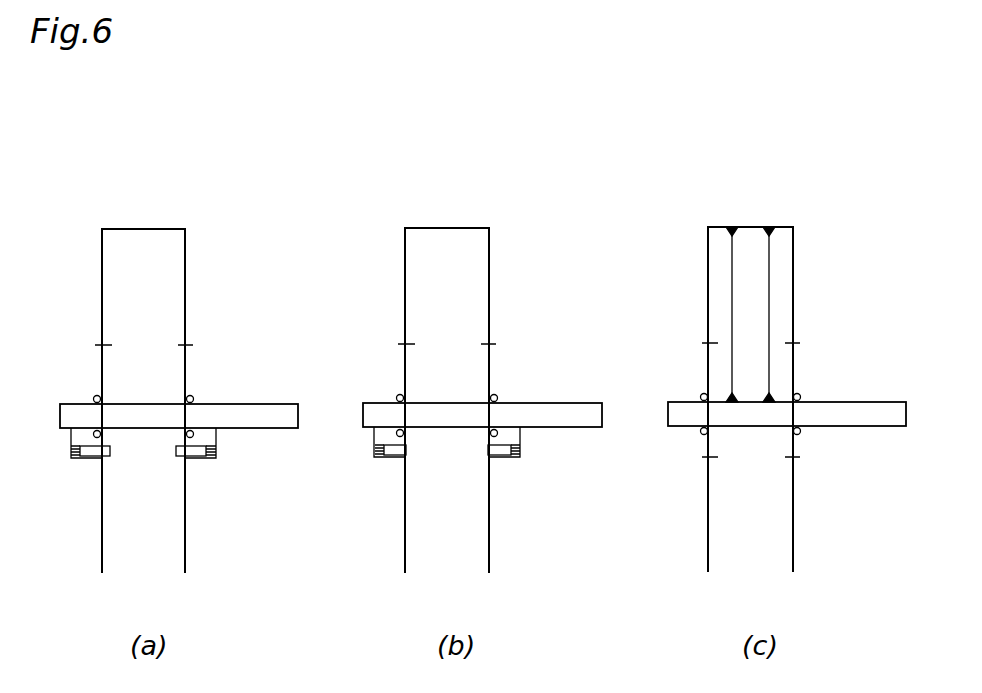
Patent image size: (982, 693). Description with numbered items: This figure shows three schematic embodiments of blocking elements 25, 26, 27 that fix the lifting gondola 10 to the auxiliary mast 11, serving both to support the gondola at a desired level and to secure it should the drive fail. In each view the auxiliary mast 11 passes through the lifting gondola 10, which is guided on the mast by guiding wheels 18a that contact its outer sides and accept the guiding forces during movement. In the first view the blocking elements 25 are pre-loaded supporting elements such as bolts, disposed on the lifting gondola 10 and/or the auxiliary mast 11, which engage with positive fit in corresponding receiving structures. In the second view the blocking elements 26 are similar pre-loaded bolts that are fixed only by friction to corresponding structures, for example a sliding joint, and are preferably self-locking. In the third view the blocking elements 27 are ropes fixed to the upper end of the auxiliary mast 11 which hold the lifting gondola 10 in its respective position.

The auxiliary mast 11 is at (188, 266).
The lifting gondola 10 is at (285, 420).
The guiding wheels 18a is at (193, 396).
The blocking elements 25 is at (199, 458).
The blocking elements 26 is at (502, 453).
The blocking elements 27 is at (770, 368).